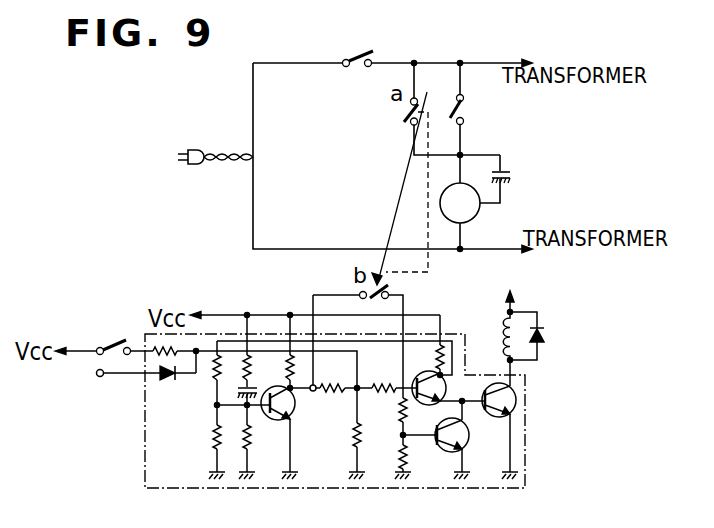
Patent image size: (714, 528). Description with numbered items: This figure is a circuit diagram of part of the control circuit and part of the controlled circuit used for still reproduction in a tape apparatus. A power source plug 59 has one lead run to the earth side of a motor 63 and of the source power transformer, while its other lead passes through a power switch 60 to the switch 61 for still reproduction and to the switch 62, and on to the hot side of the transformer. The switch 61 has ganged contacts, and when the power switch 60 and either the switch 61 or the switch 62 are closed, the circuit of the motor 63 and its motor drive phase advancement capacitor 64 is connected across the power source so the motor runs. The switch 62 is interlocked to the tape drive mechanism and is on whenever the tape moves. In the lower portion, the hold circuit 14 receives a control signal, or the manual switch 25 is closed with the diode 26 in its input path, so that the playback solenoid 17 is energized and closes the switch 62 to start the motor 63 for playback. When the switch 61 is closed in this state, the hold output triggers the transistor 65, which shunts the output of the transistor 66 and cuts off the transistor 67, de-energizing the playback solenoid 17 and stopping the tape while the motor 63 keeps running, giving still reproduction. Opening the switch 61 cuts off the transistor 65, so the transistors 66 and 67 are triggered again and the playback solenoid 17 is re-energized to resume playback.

The power switch 60 is at (356, 52).
The power source plug 59 is at (198, 150).
The switch for still reproduction 61 is at (404, 114).
The switch interlocked to tape drive mechanism 62 is at (463, 113).
The motor 63 is at (473, 218).
The motor drive phase advancement capacitor 64 is at (506, 169).
The manual switch for playback 25 is at (110, 341).
The diode 26 is at (164, 381).
The hold circuit 14 is at (530, 383).
The transistor 66 is at (423, 376).
The transistor 67 is at (512, 402).
The transistor 65 is at (447, 454).
The playback solenoid 17 is at (522, 322).